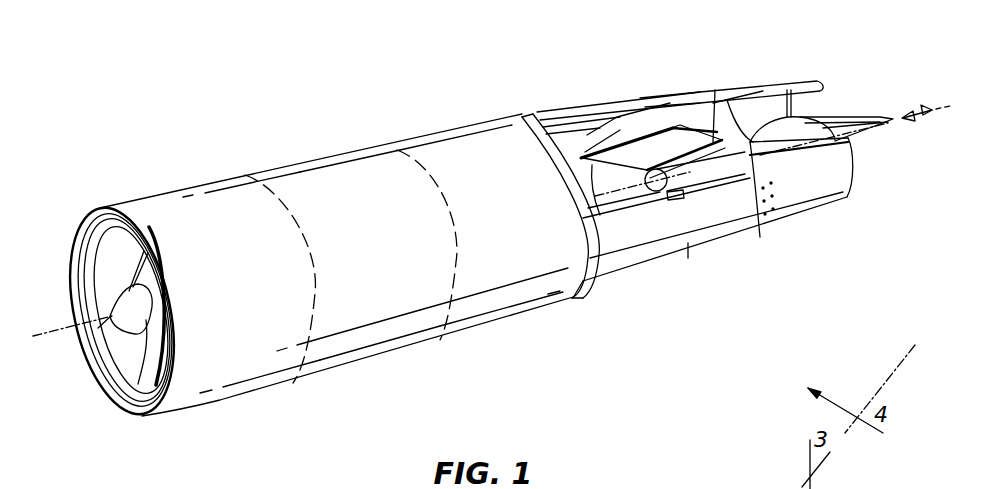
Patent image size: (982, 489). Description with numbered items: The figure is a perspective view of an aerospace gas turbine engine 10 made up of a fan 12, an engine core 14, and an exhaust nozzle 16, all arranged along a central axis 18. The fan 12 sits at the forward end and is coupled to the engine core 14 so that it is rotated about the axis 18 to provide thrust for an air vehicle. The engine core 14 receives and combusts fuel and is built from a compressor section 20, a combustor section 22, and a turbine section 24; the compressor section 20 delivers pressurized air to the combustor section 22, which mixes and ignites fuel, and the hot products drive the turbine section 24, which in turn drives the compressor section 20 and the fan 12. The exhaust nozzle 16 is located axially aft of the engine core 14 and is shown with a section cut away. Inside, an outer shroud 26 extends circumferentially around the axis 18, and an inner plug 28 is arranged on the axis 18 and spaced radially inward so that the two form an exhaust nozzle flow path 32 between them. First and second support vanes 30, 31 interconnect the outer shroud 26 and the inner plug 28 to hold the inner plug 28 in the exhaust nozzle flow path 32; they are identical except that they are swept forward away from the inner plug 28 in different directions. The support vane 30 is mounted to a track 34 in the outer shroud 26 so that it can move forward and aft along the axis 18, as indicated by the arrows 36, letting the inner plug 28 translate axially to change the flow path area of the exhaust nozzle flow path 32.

The aerospace gas turbine engine 10 is at (808, 48).
The fan 12 is at (115, 287).
The engine core 14 is at (317, 97).
The exhaust nozzle 16 is at (626, 70).
The axis 18 is at (57, 330).
The compressor section 20 is at (192, 197).
The combustor section 22 is at (347, 178).
The turbine section 24 is at (470, 150).
The outer shroud 26 is at (731, 100).
The inner plug 28 is at (822, 110).
The support vane 30 is at (662, 142).
The second support vane 31 is at (713, 187).
The exhaust nozzle flow path 32 is at (738, 121).
The track 34 is at (590, 137).
The arrows 36 is at (907, 118).